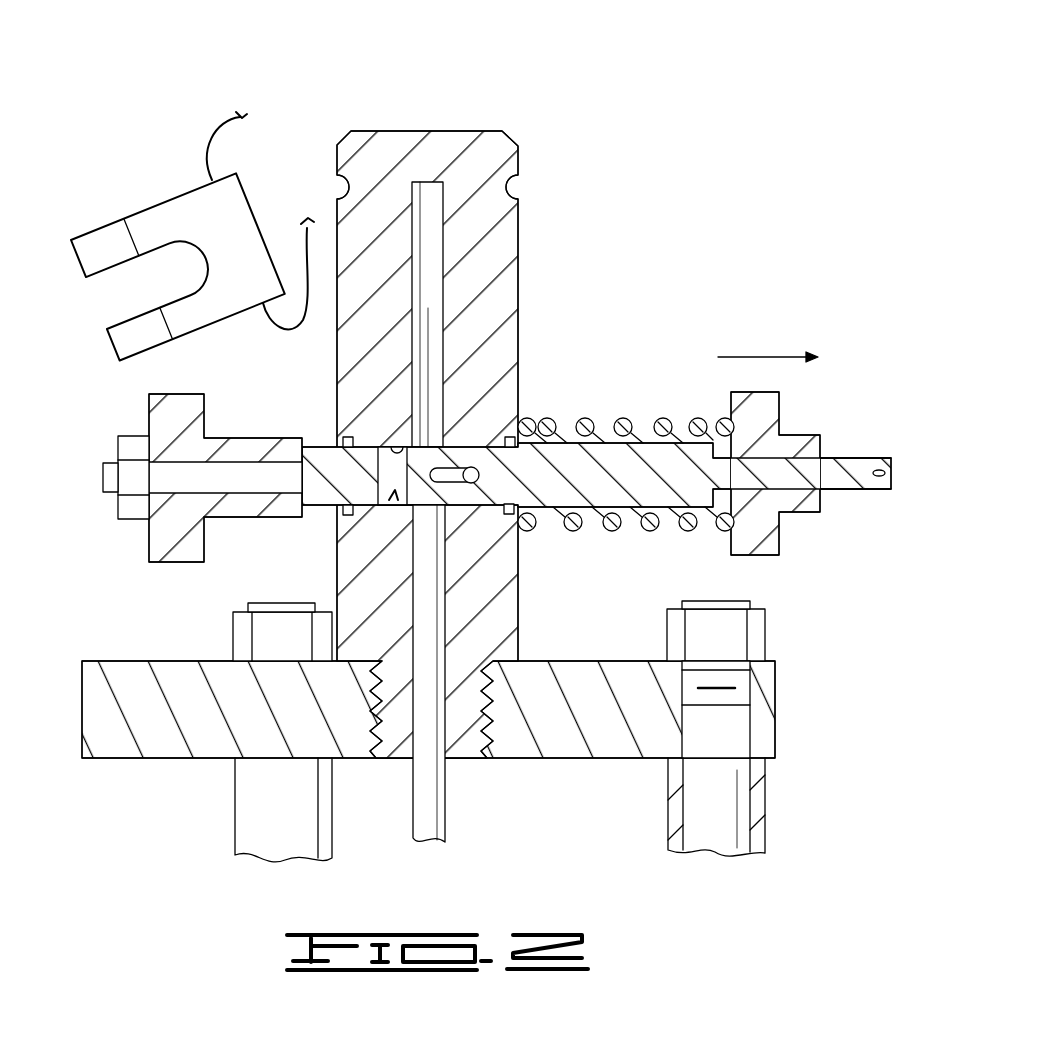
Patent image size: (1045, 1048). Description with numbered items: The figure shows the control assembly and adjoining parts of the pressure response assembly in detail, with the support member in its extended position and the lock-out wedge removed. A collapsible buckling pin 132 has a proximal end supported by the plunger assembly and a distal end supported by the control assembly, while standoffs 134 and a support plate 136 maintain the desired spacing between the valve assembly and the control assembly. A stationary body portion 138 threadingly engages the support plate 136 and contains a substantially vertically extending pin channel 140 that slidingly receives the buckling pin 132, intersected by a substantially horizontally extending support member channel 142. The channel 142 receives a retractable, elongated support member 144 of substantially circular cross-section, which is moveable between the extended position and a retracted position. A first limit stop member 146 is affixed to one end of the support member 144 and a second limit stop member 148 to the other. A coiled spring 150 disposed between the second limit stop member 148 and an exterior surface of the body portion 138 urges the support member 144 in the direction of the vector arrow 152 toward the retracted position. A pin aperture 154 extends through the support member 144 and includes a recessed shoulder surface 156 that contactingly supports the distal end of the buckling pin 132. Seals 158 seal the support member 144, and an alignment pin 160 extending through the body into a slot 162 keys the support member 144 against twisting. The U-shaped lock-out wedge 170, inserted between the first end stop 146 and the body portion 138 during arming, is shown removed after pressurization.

The buckling pin 132 is at (433, 806).
The standoffs 134 is at (255, 808).
The support plate 136 is at (103, 690).
The body portion 138 is at (467, 131).
The pin channel 140 is at (428, 208).
The support member channel 142 is at (392, 447).
The support member 144 is at (647, 440).
The first limit stop member 146 is at (150, 546).
The second limit stop member 148 is at (782, 530).
The coiled spring 150 is at (583, 420).
The vector arrow 152 is at (771, 357).
The pin aperture 154 is at (412, 505).
The recessed shoulder surface 156 is at (397, 505).
The seals 158 is at (343, 437).
The alignment pin 160 is at (472, 483).
The slot 162 is at (448, 482).
The lock-out wedge 170 is at (175, 205).